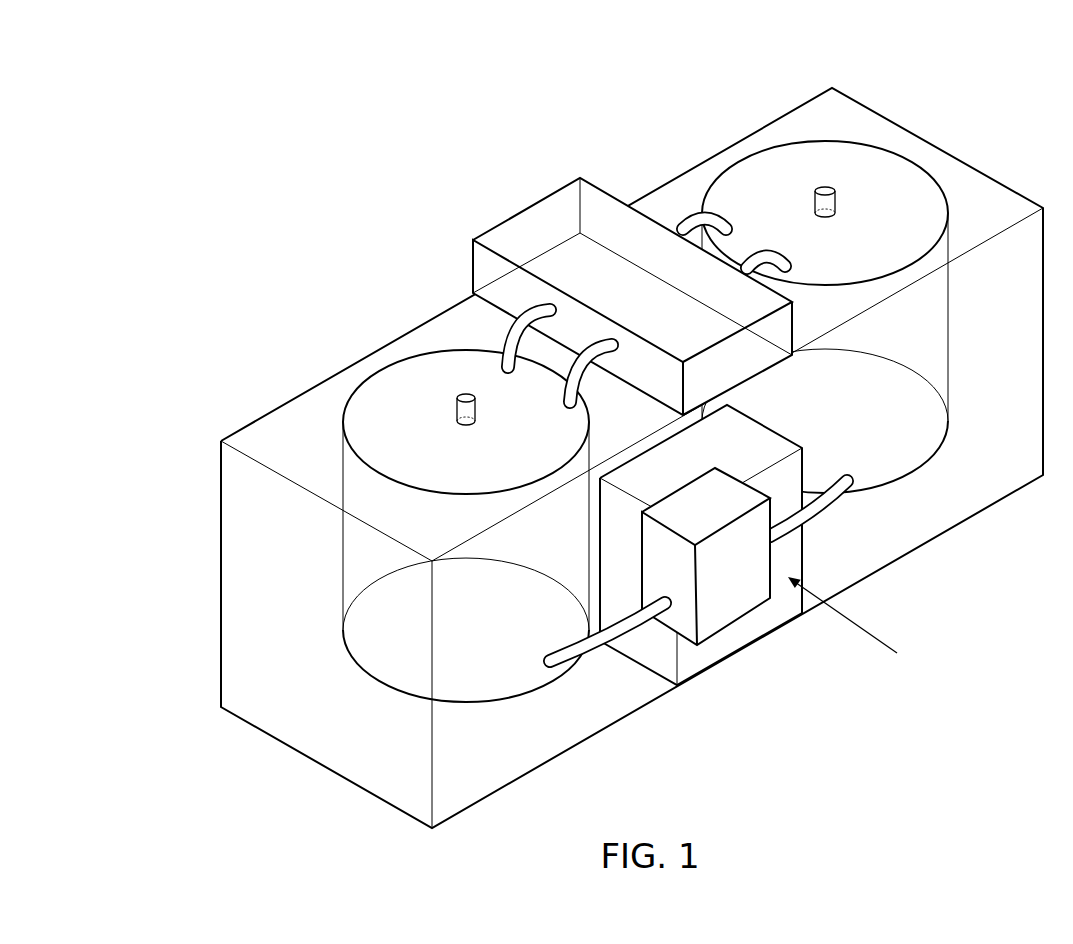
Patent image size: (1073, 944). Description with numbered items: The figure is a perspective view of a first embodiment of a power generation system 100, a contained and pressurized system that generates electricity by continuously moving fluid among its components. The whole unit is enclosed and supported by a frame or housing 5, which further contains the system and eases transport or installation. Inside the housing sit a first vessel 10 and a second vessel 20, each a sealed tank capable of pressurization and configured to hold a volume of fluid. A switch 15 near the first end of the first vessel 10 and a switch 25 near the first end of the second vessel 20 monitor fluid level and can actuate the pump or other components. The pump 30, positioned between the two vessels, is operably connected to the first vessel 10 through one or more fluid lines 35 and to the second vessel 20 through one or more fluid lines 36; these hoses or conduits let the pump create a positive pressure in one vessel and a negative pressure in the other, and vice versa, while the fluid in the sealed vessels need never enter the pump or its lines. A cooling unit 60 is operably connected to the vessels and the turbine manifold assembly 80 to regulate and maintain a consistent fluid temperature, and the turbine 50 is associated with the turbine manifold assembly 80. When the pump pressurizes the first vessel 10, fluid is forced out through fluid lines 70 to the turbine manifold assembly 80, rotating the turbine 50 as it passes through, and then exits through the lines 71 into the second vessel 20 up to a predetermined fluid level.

The power generation system 100 is at (617, 420).
The frame or housing 5 is at (248, 440).
The first vessel 10 is at (395, 413).
The switch 15 is at (458, 407).
The second vessel 20 is at (902, 178).
The switch 25 is at (814, 200).
The pump 30 is at (526, 223).
The fluid lines 35 is at (580, 373).
The fluid lines 36 is at (760, 260).
The turbine 50 is at (738, 603).
The cooling unit 60 is at (698, 663).
The fluid lines 70 is at (595, 647).
The lines 71 is at (827, 503).
The turbine manifold assembly 80 is at (855, 620).